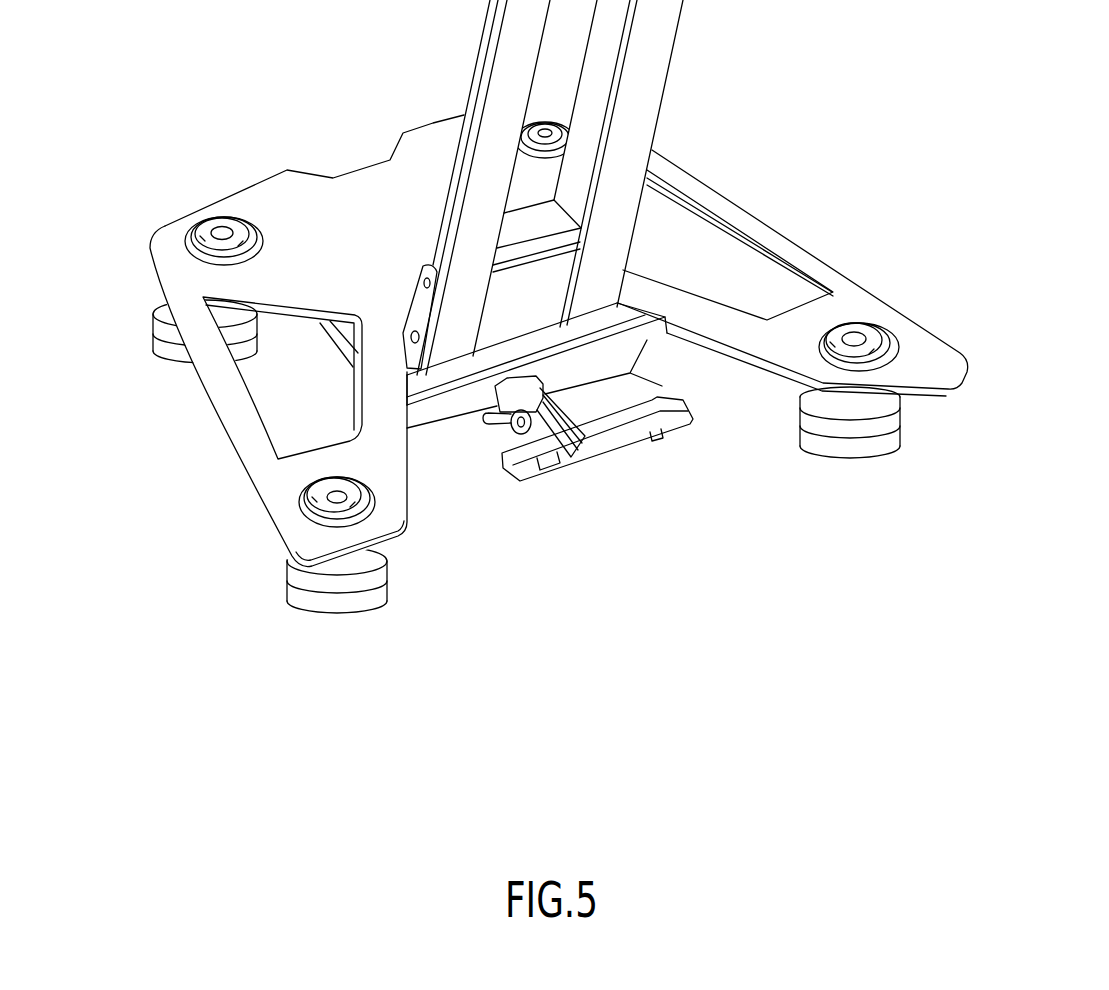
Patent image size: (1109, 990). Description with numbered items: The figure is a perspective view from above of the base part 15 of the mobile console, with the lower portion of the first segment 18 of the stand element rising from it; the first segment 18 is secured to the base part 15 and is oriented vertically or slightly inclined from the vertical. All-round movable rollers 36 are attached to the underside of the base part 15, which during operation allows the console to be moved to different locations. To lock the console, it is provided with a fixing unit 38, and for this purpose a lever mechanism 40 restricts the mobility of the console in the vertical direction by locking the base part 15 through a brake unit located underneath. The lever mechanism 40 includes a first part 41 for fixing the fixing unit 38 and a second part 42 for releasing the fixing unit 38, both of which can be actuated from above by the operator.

The base part 15 is at (190, 185).
The first segment 18 is at (637, 90).
The rollers 36 is at (308, 601).
The fixing unit 38 is at (456, 425).
The lever mechanism 40 is at (588, 491).
The first part 41 is at (668, 412).
The second part 42 is at (515, 470).